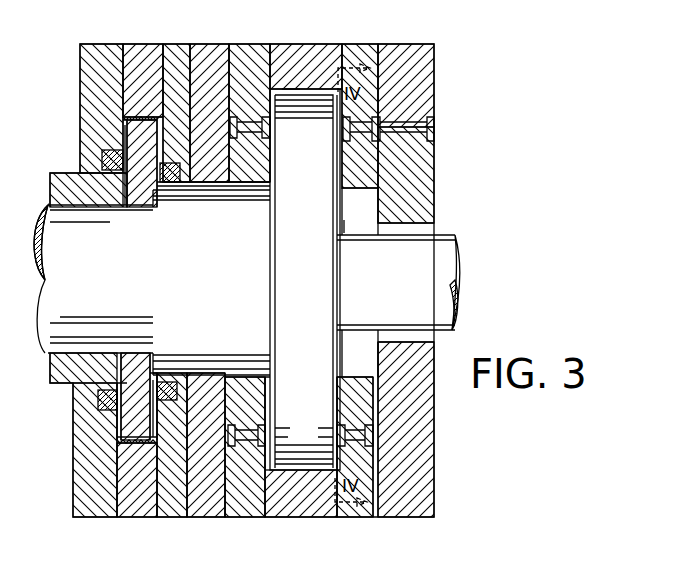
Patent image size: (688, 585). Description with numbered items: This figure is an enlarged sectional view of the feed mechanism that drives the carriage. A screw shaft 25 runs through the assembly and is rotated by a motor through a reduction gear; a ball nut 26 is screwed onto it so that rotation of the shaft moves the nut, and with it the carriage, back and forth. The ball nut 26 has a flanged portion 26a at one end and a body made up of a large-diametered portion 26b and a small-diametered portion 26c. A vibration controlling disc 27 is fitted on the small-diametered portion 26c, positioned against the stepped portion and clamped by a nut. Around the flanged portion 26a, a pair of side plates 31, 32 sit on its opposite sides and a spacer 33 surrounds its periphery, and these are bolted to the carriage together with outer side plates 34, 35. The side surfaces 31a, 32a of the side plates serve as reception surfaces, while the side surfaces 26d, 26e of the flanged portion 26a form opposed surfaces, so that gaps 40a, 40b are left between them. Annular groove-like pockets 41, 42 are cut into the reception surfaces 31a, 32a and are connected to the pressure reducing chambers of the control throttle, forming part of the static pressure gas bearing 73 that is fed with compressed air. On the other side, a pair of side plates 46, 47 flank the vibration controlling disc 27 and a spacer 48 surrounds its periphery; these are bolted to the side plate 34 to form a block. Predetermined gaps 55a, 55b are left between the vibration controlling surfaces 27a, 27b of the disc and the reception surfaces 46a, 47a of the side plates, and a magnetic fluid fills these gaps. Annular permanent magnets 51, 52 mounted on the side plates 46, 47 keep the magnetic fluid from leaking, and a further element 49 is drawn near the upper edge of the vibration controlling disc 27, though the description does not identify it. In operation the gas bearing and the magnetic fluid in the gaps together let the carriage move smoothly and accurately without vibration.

The screw shaft 25 is at (410, 280).
The ball nut 26 is at (357, 214).
The flanged portion 26a is at (324, 280).
The large-diametered portion 26b is at (234, 280).
The small-diametered portion 26c is at (121, 280).
The side surface of the flanged portion 26d is at (265, 168).
The side surface of the flanged portion 26e is at (338, 342).
The vibration controlling disc 27 is at (139, 203).
The vibration controlling surface 27a is at (122, 133).
The vibration controlling surface 27b is at (163, 118).
The side plate 31 is at (246, 50).
The side surface (reception surface) 31a is at (268, 393).
The side plate 32 is at (360, 50).
The side surface (reception surface) 32a is at (337, 168).
The spacer 33 is at (318, 50).
The side plate 34 is at (205, 50).
The side plate 35 is at (420, 48).
The gap 40a is at (268, 455).
The gap 40b is at (337, 402).
The annular groove-like pocket 41 is at (304, 435).
The annular groove-like pocket 42 is at (347, 438).
The side plate 46 is at (73, 518).
The reception surface 46a is at (122, 455).
The side plate 47 is at (178, 505).
The reception surface 47a is at (146, 445).
The spacer 48 is at (127, 505).
The seal 49 is at (125, 113).
The annular permanent magnet 51 is at (100, 400).
The annular permanent magnet 52 is at (178, 400).
The gap 55a is at (116, 421).
The gap 55b is at (155, 412).
The static pressure gas bearing 73 is at (295, 75).